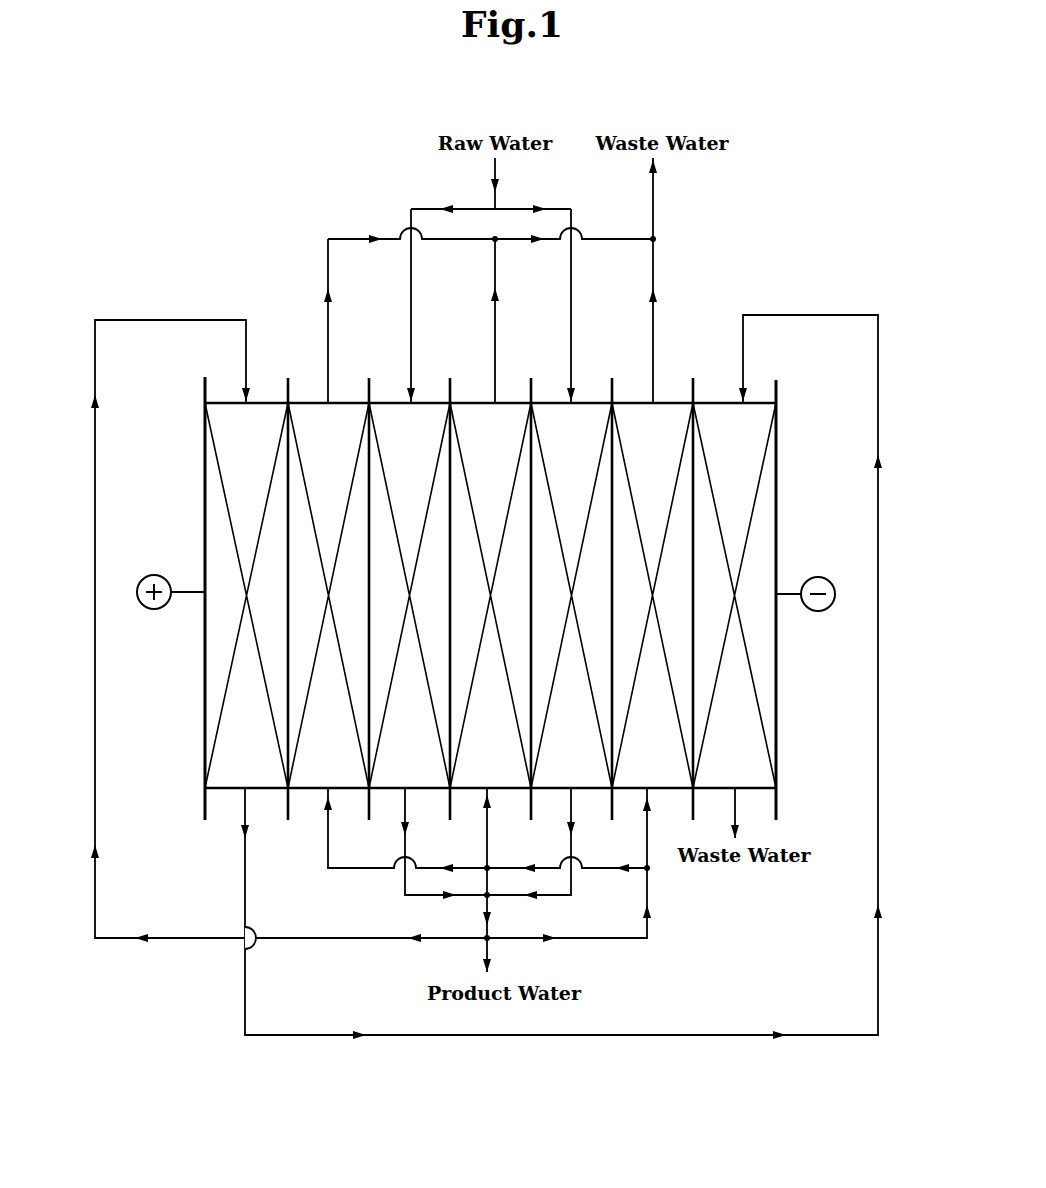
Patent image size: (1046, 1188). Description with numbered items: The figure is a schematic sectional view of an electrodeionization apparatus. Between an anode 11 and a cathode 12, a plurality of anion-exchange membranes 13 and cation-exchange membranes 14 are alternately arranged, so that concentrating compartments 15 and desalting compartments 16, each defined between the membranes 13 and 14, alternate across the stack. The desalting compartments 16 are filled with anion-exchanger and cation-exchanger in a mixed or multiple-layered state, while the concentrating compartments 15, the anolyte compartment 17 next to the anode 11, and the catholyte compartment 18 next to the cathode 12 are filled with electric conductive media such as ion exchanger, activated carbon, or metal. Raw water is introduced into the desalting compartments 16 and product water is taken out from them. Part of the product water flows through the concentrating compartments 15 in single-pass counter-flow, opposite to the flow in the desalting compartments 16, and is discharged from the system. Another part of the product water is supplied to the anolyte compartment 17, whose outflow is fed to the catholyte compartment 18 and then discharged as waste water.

The anode 11 is at (205, 492).
The cathode 12 is at (776, 500).
The anion-exchange membrane 13 is at (369, 378).
The cation-exchange membrane 14 is at (288, 378).
The concentrating compartment 15 is at (342, 546).
The desalting compartment 16 is at (424, 546).
The anolyte compartment 17 is at (284, 546).
The catholyte compartment 18 is at (698, 546).